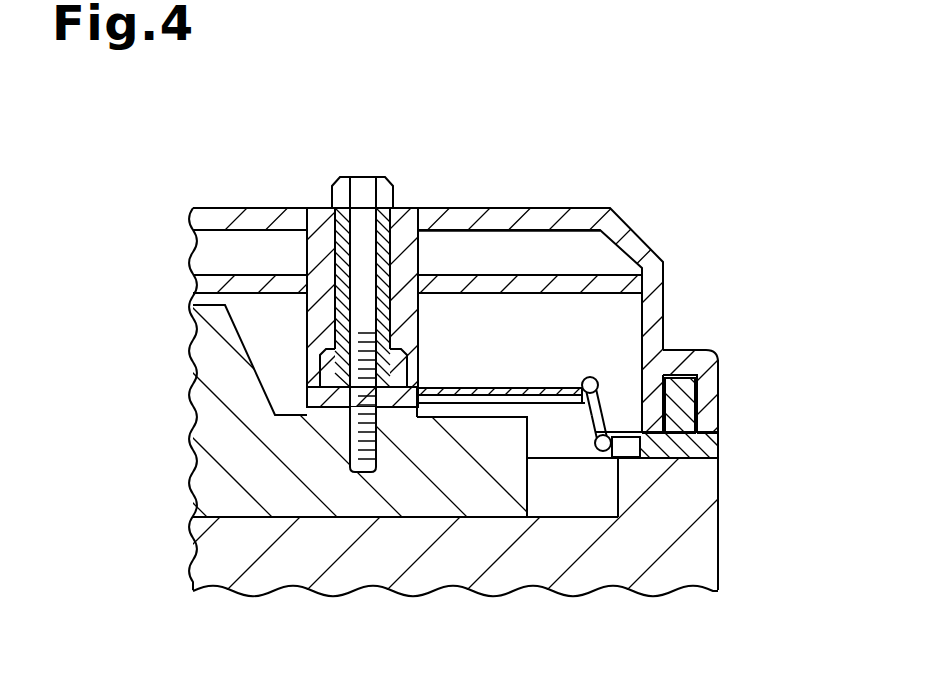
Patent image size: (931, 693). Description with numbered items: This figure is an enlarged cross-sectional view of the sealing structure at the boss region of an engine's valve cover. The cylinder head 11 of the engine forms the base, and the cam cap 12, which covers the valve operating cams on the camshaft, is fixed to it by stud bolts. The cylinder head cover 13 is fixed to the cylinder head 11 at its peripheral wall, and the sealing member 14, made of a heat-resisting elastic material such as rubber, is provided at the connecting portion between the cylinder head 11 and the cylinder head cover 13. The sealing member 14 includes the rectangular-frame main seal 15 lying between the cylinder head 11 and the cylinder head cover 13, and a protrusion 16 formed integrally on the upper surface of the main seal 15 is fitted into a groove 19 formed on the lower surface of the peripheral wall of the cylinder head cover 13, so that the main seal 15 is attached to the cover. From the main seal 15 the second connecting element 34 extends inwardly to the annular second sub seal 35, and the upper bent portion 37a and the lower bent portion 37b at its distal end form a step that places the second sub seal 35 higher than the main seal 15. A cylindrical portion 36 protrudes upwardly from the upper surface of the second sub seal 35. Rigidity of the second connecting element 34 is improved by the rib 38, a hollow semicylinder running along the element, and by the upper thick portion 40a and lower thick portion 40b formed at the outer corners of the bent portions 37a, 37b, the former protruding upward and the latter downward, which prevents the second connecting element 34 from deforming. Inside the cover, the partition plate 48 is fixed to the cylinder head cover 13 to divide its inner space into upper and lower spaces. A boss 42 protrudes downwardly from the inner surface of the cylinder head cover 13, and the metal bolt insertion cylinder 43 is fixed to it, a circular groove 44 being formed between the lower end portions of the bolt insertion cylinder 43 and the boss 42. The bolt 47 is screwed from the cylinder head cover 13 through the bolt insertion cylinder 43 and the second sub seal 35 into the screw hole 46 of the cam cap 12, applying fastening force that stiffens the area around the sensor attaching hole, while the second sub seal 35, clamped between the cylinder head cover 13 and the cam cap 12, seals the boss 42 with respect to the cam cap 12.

The cylinder head 11 is at (709, 553).
The cam cap 12 is at (193, 438).
The cylinder head cover 13 is at (580, 213).
The sealing member 14 is at (711, 437).
The main seal 15 is at (704, 472).
The protrusion 16 is at (704, 392).
The groove 19 is at (679, 377).
The second connecting element 34 is at (494, 397).
The second sub seal 35 is at (308, 392).
The cylindrical portion 36 is at (307, 349).
The upper bent portion 37a is at (584, 383).
The lower bent portion 37b is at (615, 418).
The rib 38 is at (450, 388).
The upper thick portion 40a is at (590, 378).
The lower thick portion 40b is at (594, 450).
The boss 42 is at (412, 252).
The bolt insertion cylinder 43 is at (396, 222).
The circular groove 44 is at (327, 347).
The screw hole 46 is at (375, 447).
The bolt 47 is at (353, 178).
The partition plate 48 is at (518, 266).